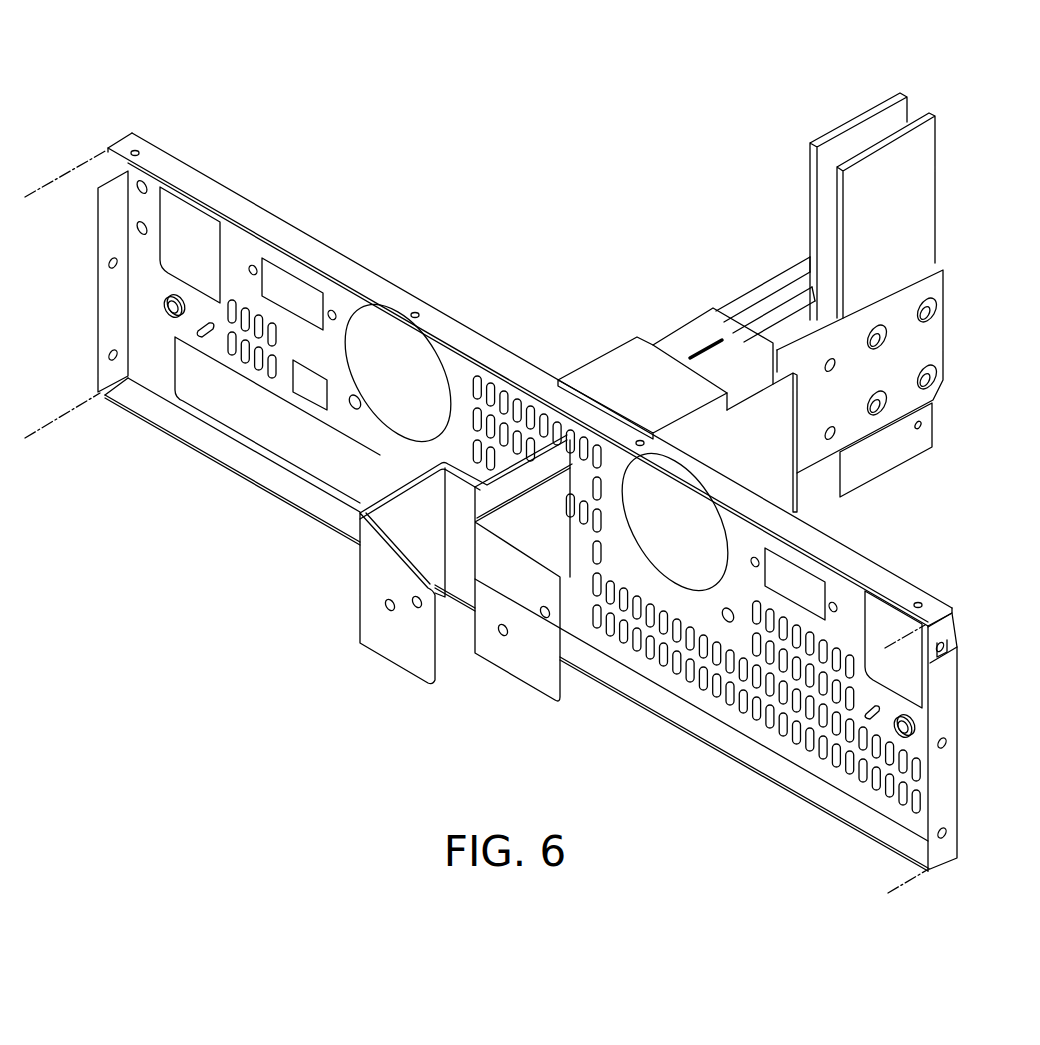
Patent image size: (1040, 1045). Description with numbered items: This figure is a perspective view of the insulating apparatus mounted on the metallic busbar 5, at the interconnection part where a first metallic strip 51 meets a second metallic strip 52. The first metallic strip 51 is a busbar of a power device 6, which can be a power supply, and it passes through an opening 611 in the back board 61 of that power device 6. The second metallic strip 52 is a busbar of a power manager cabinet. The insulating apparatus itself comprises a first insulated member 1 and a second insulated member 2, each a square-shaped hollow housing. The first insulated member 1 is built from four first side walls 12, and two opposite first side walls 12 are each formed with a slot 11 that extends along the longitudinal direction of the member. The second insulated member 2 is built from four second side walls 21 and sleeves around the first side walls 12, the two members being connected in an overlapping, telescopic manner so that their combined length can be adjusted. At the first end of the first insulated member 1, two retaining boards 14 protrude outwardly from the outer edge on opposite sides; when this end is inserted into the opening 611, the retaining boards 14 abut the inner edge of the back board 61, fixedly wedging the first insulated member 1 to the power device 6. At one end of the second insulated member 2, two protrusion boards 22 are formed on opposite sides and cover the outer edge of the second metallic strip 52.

The power device 6 is at (62, 170).
The back board 61 is at (353, 277).
The opening 611 is at (523, 437).
The retaining board 14 is at (490, 443).
The second insulated member 2 is at (590, 350).
The second side walls 21 is at (620, 367).
The protrusion board 22 is at (780, 490).
The first insulated member 1 is at (690, 311).
The slot 11 is at (700, 348).
The first side walls 12 is at (718, 323).
The metallic busbar 5 is at (780, 291).
The first metallic strip 51 is at (523, 660).
The second metallic strip 52 is at (913, 200).